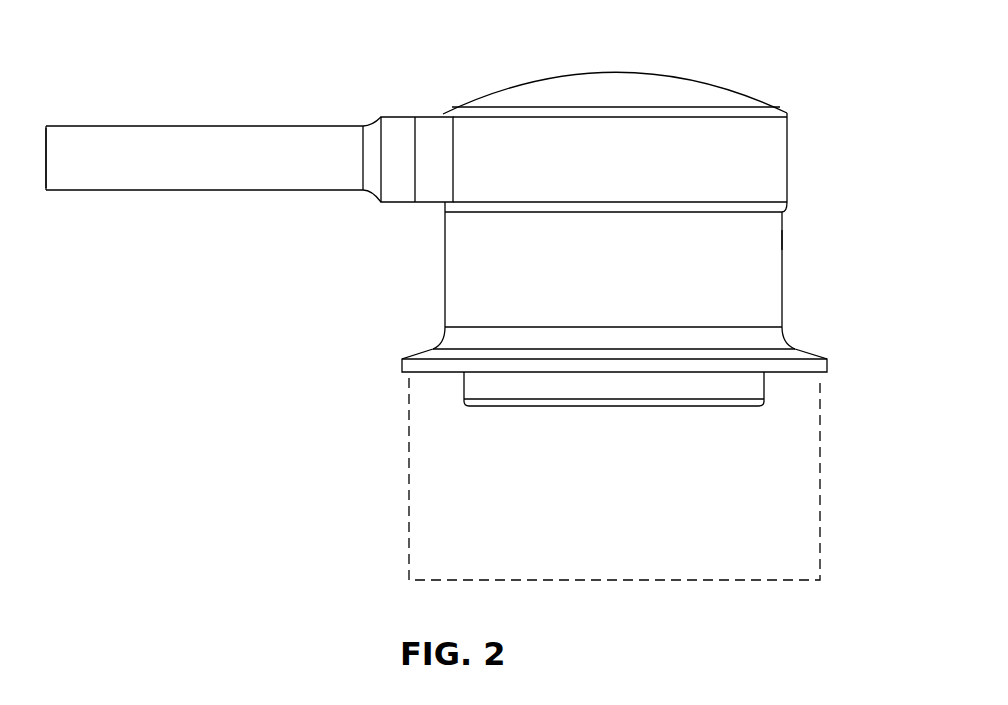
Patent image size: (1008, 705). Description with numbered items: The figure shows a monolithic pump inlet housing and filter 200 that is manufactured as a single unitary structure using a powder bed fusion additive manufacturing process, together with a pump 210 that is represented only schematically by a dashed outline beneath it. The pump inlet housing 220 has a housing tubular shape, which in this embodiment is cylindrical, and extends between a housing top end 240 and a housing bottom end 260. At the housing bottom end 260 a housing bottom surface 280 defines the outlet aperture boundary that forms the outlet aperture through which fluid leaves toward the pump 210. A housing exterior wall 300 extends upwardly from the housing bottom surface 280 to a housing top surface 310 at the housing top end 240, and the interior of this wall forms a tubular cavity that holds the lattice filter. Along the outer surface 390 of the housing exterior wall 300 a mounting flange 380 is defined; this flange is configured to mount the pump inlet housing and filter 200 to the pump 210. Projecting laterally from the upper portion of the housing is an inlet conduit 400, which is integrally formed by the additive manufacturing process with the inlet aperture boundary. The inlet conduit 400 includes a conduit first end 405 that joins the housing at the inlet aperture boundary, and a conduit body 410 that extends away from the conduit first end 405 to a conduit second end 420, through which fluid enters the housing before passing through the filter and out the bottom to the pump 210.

The pump inlet housing and filter 200 is at (780, 58).
The pump 210 is at (636, 488).
The pump inlet housing 220 is at (787, 207).
The housing top end 240 is at (490, 105).
The housing bottom end 260 is at (463, 375).
The housing bottom surface 280 is at (517, 408).
The housing exterior wall 300 is at (782, 278).
The housing top surface 310 is at (670, 75).
The mounting flange 380 is at (826, 356).
The outer surface 390 is at (782, 237).
The inlet conduit 400 is at (152, 147).
The conduit first end 405 is at (371, 196).
The conduit body 410 is at (230, 192).
The conduit second end 420 is at (90, 192).